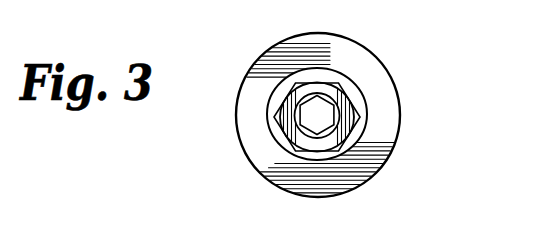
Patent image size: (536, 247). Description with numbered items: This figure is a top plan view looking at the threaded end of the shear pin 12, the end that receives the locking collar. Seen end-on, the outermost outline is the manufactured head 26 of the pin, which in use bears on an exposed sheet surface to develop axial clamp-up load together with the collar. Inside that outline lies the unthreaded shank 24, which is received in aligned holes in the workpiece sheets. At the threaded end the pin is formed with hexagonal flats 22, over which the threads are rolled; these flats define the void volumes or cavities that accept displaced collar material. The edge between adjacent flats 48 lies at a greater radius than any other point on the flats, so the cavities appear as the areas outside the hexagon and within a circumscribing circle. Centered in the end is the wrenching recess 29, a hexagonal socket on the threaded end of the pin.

The shear pin 12 is at (412, 123).
The hexagonal flats 22 is at (350, 143).
The unthreaded shank 24 is at (314, 68).
The manufactured head 26 is at (251, 70).
The wrenching recess 29 is at (328, 110).
The edge between adjacent flats 48 is at (339, 76).